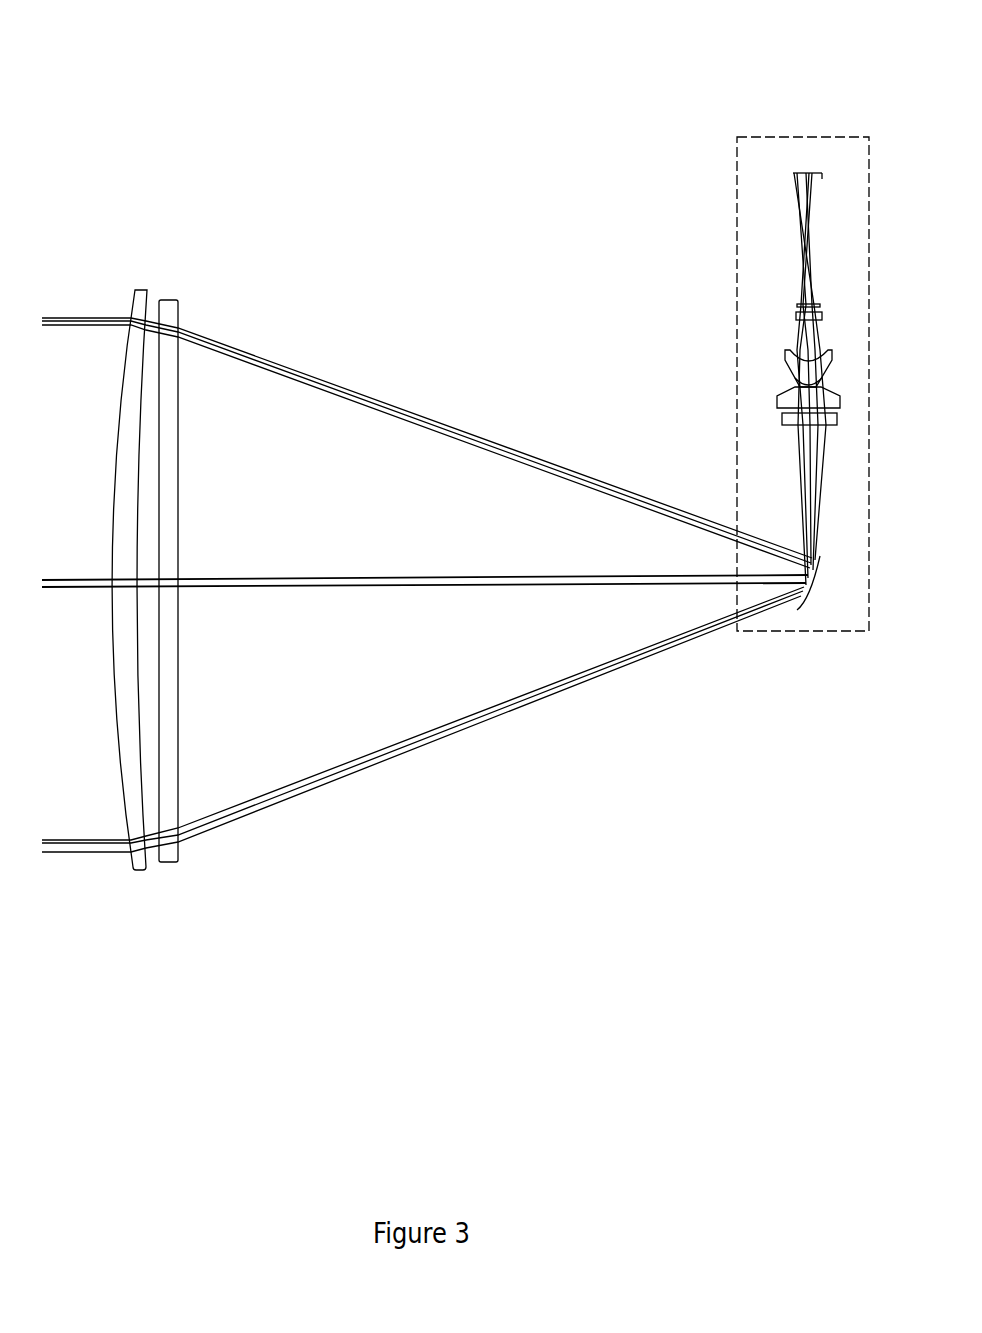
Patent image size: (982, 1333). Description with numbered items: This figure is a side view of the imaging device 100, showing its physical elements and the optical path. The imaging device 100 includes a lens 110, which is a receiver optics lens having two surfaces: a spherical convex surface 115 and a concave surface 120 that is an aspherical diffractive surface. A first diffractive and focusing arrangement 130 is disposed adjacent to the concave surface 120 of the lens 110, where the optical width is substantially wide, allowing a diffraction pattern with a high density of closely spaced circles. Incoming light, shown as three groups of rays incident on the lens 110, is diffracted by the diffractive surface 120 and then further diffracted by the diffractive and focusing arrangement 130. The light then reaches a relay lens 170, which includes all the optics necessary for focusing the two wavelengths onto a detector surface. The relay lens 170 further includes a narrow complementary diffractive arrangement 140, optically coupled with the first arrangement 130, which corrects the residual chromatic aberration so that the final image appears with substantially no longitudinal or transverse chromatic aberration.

The imaging device 100 is at (306, 70).
The lens 110 is at (123, 455).
The convex surface 115 is at (131, 300).
The concave surface 120 is at (148, 294).
The diffractive and focusing arrangement 130 is at (179, 490).
The complementary diffractive arrangement 140 is at (782, 420).
The relay lens 170 is at (737, 260).